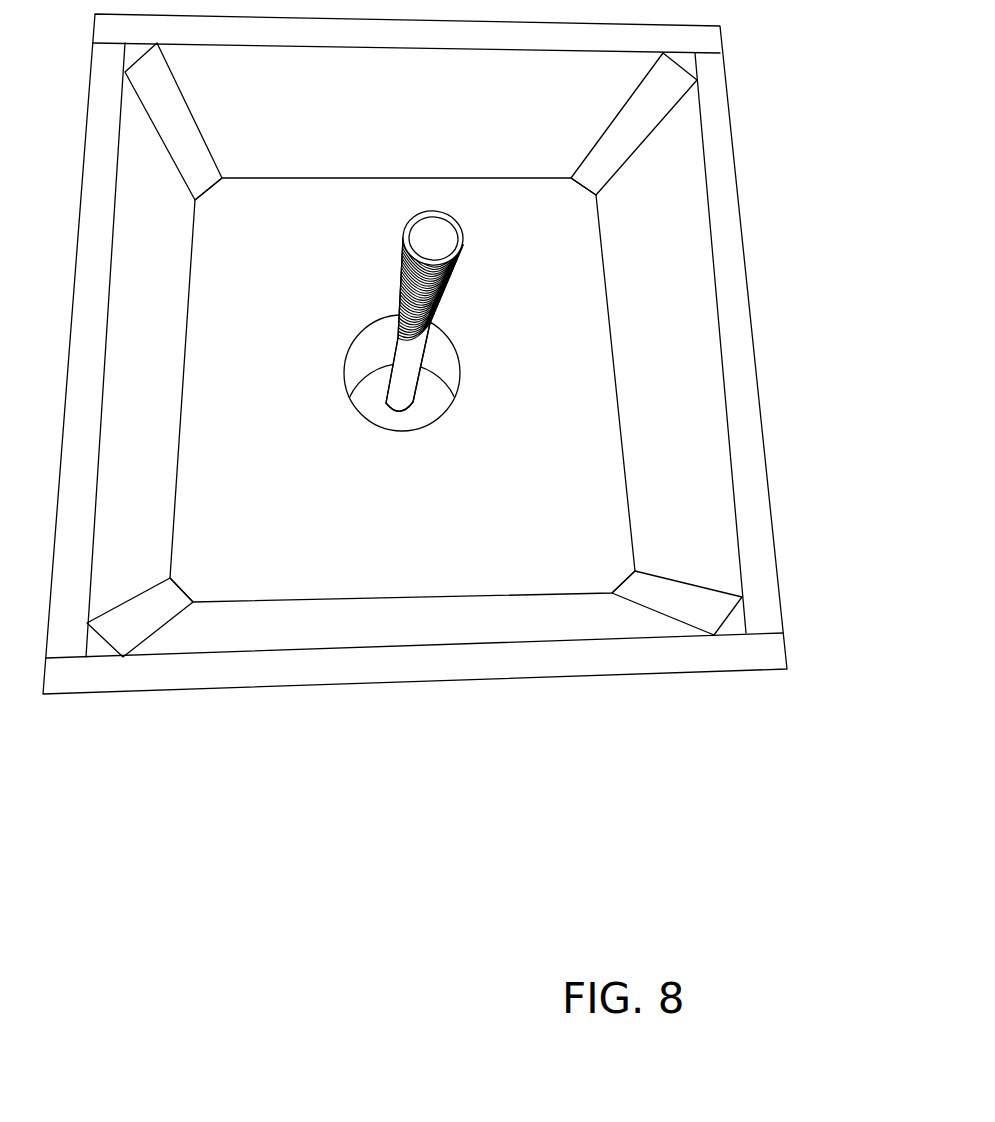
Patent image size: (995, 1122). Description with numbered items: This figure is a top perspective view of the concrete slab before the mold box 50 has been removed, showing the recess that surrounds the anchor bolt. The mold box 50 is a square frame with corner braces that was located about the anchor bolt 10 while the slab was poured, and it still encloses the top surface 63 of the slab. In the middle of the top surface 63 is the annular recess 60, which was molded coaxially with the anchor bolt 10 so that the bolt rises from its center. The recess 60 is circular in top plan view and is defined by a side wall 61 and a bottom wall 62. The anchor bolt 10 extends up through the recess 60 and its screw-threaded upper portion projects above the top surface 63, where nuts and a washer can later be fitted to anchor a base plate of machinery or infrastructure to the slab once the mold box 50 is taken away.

The anchor bolt 10 is at (478, 274).
The mold box 50 is at (752, 162).
The annular recess 60 is at (465, 370).
The side wall 61 is at (370, 352).
The bottom wall 62 is at (372, 400).
The top surface 63 is at (576, 541).